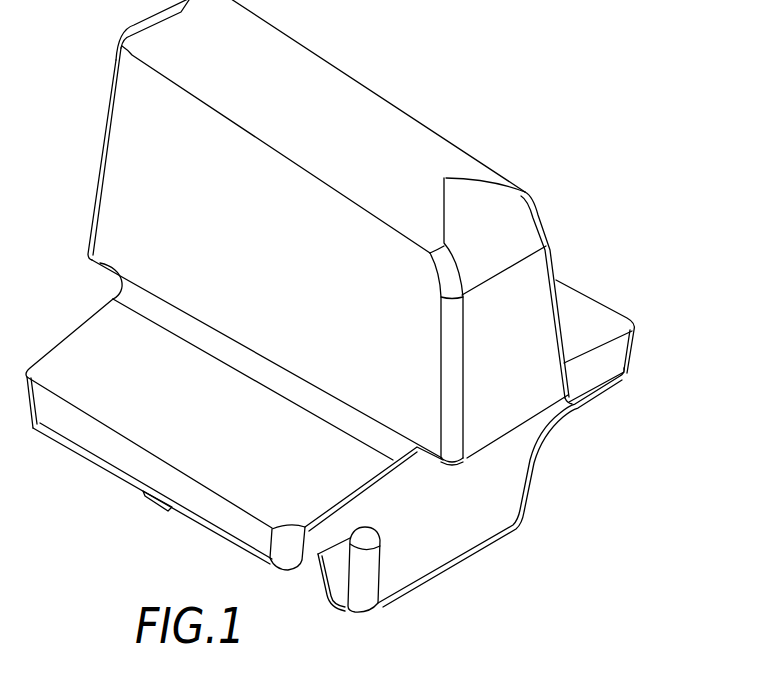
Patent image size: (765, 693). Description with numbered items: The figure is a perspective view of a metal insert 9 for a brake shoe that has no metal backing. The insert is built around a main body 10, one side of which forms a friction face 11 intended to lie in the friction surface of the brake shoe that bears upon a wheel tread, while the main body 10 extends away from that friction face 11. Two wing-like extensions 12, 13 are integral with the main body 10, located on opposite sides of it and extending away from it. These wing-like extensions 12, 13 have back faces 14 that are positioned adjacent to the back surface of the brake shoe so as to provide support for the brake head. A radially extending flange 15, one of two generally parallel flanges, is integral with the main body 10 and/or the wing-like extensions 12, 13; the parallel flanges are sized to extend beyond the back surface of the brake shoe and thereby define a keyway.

The metal insert 9 is at (335, 306).
The main body 10 is at (225, 240).
The friction face 11 is at (295, 100).
The wing-like extension 12 is at (194, 410).
The wing-like extension 13 is at (568, 238).
The back face 14 is at (178, 512).
The radially extending flange 15 is at (440, 528).